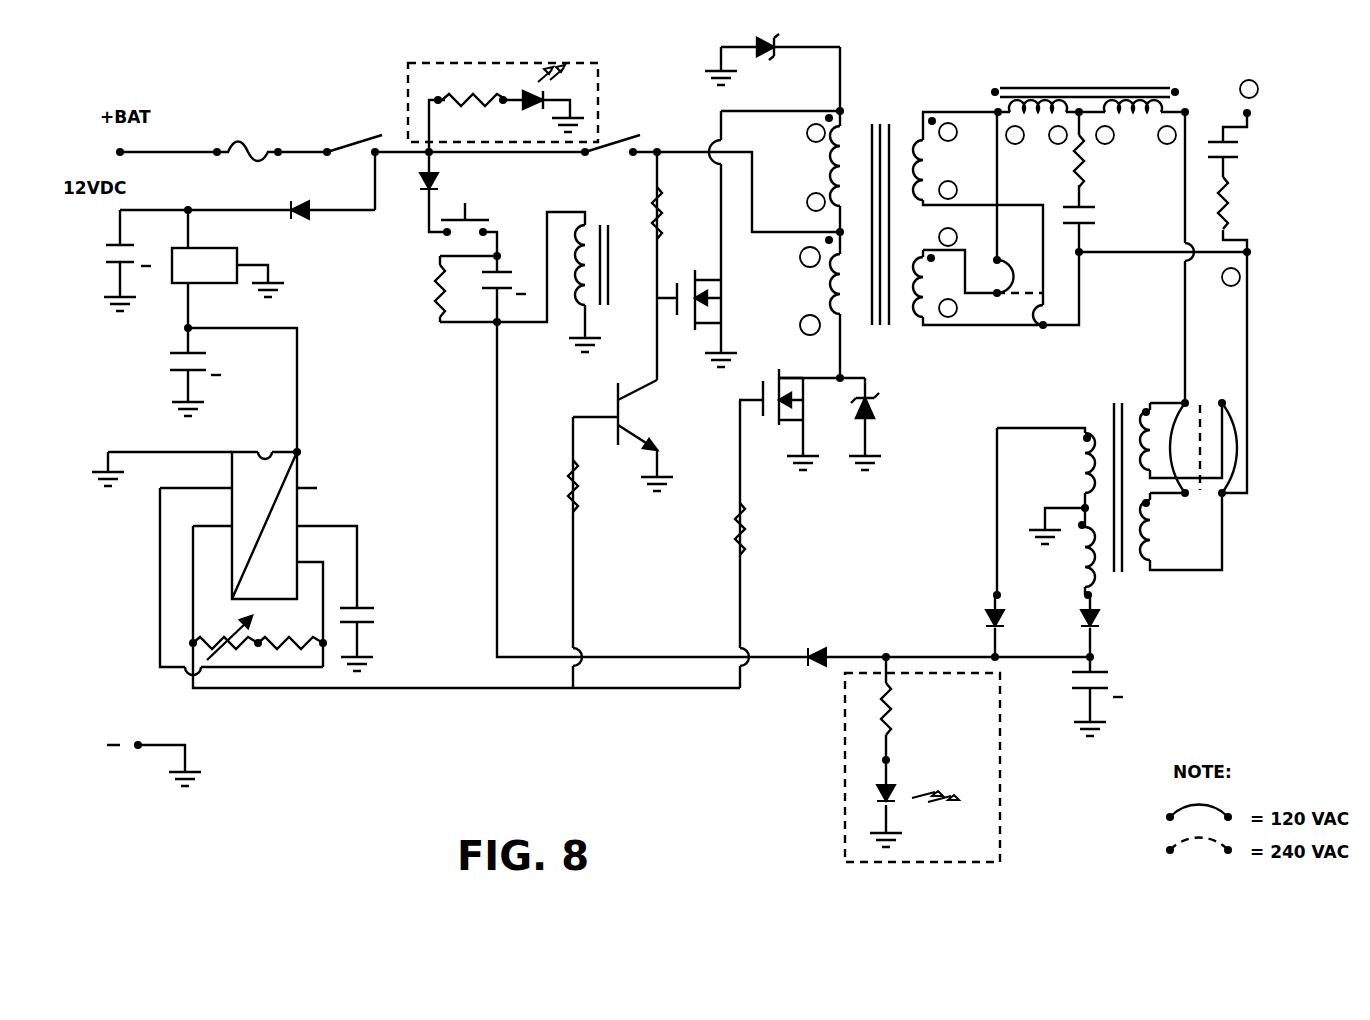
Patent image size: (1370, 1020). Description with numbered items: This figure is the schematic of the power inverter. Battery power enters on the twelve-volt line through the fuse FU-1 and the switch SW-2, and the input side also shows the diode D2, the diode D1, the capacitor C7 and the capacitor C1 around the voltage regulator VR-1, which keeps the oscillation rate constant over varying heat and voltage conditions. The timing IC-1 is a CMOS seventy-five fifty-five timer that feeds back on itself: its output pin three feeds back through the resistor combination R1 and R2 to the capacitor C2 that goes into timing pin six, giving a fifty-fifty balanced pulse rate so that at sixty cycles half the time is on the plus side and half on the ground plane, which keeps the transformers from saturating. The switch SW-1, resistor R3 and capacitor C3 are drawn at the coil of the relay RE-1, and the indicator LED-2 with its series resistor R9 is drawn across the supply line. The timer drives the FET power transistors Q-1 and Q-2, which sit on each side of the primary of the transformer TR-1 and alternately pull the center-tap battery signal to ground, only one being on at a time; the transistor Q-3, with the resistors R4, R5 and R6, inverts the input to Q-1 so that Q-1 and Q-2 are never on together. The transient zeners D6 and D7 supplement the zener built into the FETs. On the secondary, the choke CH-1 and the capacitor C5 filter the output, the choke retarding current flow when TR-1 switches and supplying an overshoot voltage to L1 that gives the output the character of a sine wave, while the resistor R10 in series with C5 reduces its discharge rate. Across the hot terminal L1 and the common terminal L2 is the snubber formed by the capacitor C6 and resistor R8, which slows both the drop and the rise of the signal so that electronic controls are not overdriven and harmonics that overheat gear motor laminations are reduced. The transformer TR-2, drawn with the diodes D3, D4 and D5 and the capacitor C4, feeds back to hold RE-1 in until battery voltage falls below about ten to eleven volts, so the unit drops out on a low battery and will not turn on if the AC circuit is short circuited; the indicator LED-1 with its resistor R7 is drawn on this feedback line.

The fuse FU-1 is at (247, 131).
The power switch SW-2 is at (352, 129).
The diode D2 is at (308, 226).
The capacitor C7 is at (108, 266).
The voltage regulator VR-1 is at (220, 253).
The capacitor C1 is at (177, 373).
The integrated circuit timer IC-1 is at (264, 510).
The variable resistor R1 is at (225, 635).
The resistor R2 is at (292, 629).
The capacitor C2 is at (373, 618).
The diode D1 is at (414, 182).
The resistor R9 is at (476, 114).
The light emitting diode LED-2 is at (521, 102).
The push button switch SW-1 is at (487, 211).
The resistor R3 is at (422, 289).
The capacitor C3 is at (508, 289).
The relay RE-1 is at (602, 246).
The resistor R4 is at (679, 213).
The FET power transistor Q-1 is at (724, 300).
The transistor Q-3 is at (637, 416).
The resistor R5 is at (550, 486).
The resistor R6 is at (766, 529).
The transient zener D7 is at (780, 40).
The transformer TR-1 is at (878, 237).
The FET power transistor Q-2 is at (806, 400).
The transient zener D6 is at (887, 408).
The diode D3 is at (823, 643).
The diode D4 is at (969, 624).
The diode D5 is at (1117, 624).
The resistor R7 is at (913, 710).
The light emitting diode LED-1 is at (901, 767).
The capacitor C4 is at (1113, 689).
The transformer TR-2 is at (1114, 484).
The choke CH-1 is at (1088, 100).
The resistor R10 is at (1104, 161).
The capacitor C5 is at (1099, 219).
The capacitor C6 is at (1247, 156).
The resistor R8 is at (1253, 203).
The hot side L1 is at (1269, 103).
The common L2 is at (1259, 266).